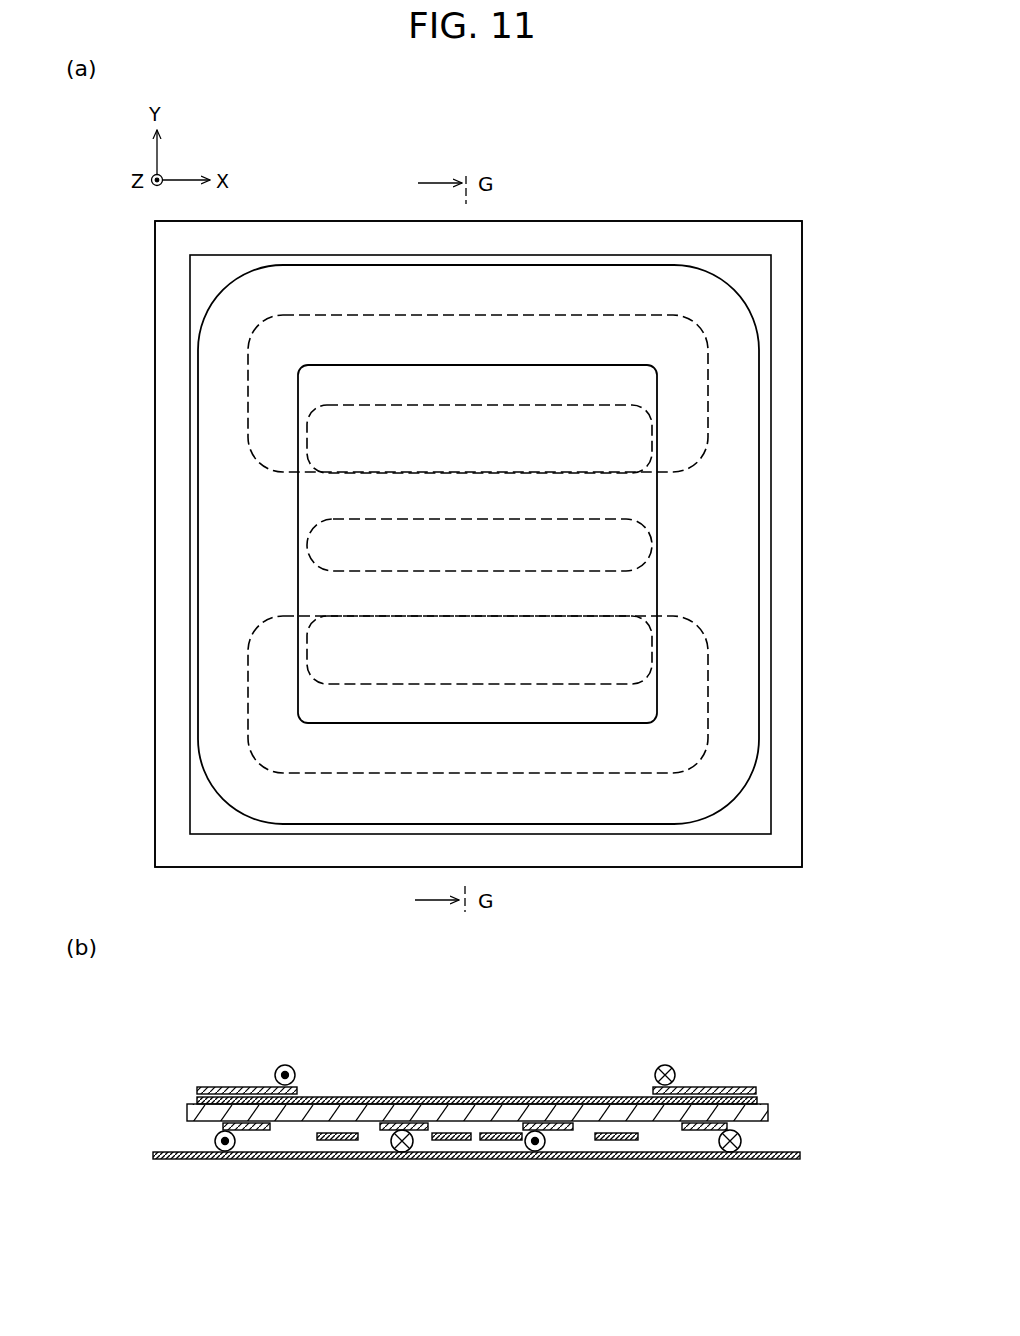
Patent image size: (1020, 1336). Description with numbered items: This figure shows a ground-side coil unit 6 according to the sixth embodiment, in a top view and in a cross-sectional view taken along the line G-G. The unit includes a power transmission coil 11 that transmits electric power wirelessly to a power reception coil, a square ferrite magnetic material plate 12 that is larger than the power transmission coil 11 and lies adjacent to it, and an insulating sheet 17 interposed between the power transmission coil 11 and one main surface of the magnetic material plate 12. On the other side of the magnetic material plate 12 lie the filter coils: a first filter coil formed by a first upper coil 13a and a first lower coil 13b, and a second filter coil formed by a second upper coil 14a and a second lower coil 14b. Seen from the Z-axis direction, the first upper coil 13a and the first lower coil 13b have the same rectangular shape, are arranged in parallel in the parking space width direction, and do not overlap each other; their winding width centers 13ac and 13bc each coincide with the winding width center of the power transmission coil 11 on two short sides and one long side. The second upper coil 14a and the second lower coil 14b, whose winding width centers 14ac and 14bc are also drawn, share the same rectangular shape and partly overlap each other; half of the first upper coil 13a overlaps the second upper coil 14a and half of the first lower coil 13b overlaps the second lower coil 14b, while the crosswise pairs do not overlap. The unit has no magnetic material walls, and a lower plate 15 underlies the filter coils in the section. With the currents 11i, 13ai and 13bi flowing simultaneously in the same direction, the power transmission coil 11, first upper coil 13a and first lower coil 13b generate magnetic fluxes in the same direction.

The ground-side coil unit 6 is at (712, 218).
The power transmission coil 11 is at (745, 698).
The current of the power transmission coil 11i is at (288, 1065).
The magnetic material plate 12 is at (762, 757).
The first upper coil 13a is at (246, 1131).
The current of the first upper coil 13ai is at (226, 1153).
The winding width center of the first upper coil 13ac is at (440, 315).
The first lower coil 13b is at (551, 1122).
The current of the first lower coil 13bi is at (538, 1153).
The winding width center of the first lower coil 13bc is at (440, 774).
The second upper coil 14a is at (338, 1142).
The winding width center of the second upper coil 14ac is at (525, 405).
The second lower coil 14b is at (453, 1142).
The winding width center of the second lower coil 14bc is at (575, 685).
The lower substrate 15 is at (797, 808).
The insulating sheet 17 is at (492, 1098).